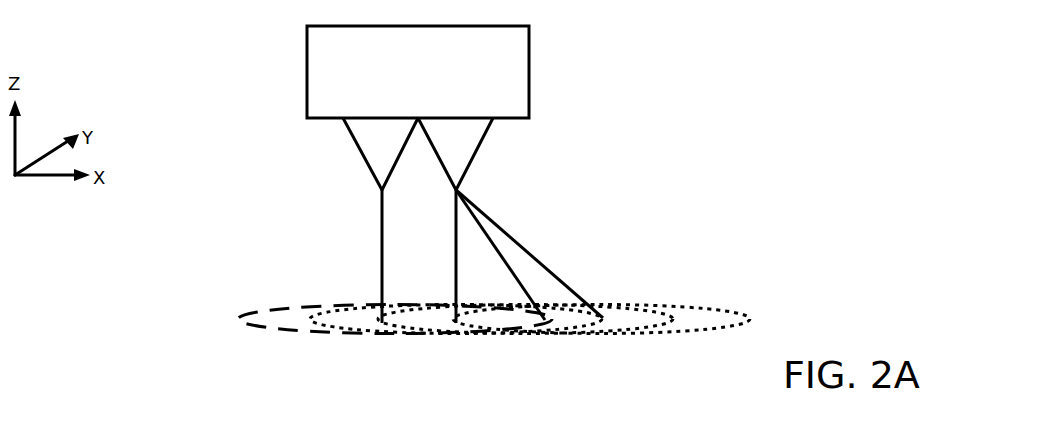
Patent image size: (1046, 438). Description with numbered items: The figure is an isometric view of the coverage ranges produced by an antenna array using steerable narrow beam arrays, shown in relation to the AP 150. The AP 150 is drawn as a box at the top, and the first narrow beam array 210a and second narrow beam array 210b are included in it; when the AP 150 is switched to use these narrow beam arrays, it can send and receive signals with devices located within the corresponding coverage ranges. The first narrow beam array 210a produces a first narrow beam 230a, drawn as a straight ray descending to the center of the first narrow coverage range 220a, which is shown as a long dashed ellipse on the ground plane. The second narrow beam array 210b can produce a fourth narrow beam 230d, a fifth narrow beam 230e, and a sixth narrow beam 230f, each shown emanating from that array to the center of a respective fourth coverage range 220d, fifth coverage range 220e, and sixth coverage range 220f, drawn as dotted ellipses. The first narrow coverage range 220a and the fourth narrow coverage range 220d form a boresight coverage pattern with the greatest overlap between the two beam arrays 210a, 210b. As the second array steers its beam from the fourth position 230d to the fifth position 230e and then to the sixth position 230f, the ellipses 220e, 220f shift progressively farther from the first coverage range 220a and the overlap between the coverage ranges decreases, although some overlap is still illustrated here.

The AP 150 is at (400, 98).
The first narrow beam array 210a is at (355, 145).
The second narrow beam array 210b is at (477, 152).
The first narrow beam 230a is at (382, 252).
The fourth narrow beam 230d is at (455, 265).
The fifth narrow beam 230e is at (513, 272).
The sixth narrow beam 230f is at (570, 290).
The first narrow coverage range 220a is at (238, 322).
The fourth narrow coverage range 220d is at (315, 328).
The fifth narrow coverage range 220e is at (423, 337).
The sixth narrow coverage range 220f is at (720, 330).